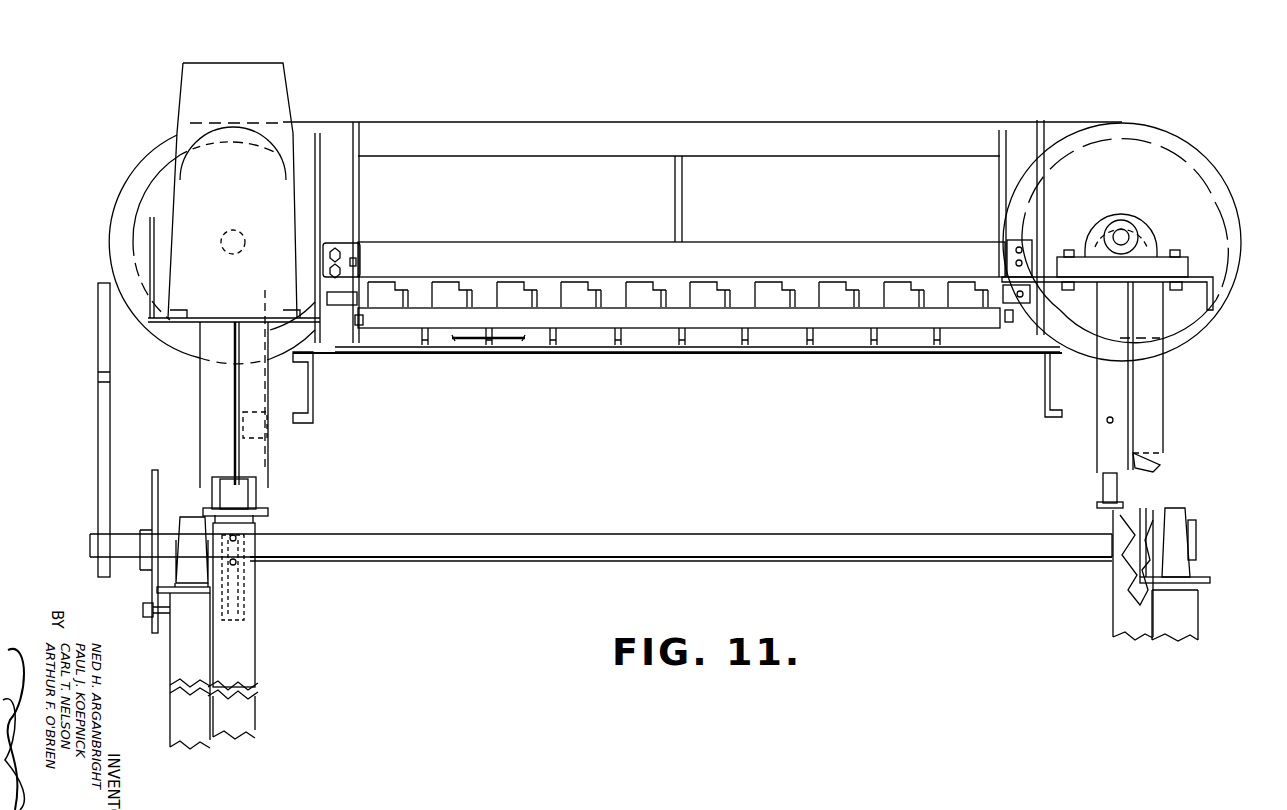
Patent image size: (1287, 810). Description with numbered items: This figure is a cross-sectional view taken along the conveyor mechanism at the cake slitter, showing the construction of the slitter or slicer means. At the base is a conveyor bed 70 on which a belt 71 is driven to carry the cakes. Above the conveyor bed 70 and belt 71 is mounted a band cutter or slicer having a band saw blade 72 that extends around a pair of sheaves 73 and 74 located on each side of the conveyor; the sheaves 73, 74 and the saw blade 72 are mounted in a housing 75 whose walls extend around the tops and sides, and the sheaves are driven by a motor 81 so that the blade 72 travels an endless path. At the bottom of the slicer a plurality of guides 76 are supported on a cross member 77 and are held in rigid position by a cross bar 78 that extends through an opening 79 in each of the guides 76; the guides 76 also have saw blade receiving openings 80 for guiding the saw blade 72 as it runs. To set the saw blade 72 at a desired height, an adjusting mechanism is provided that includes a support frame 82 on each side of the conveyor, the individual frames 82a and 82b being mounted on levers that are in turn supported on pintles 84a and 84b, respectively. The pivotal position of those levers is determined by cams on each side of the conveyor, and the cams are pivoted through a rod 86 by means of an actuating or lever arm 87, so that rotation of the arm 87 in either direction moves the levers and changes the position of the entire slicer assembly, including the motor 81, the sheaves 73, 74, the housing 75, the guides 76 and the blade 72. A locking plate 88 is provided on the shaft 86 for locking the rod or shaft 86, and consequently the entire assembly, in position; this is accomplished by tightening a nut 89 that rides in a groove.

The conveyor bed 70 is at (780, 355).
The belt 71 is at (895, 335).
The band saw blade 72 is at (480, 340).
The sheave 73 is at (145, 190).
The sheave 74 is at (1215, 200).
The housing 75 is at (148, 137).
The guides 76 is at (422, 335).
The cross member 77 is at (840, 246).
The cross bar 78 is at (708, 328).
The opening 79 is at (558, 290).
The saw blade receiving openings 80 is at (567, 332).
The motor 81 is at (200, 70).
The support frame 82 is at (280, 450).
The frame 82a is at (262, 470).
The frame 82b is at (1150, 392).
The pintle 84a is at (255, 494).
The pintle 84b is at (1110, 486).
The rod 86 is at (712, 538).
The actuating or lever arm 87 is at (98, 342).
The locking plate 88 is at (157, 470).
The nut 89 is at (145, 609).